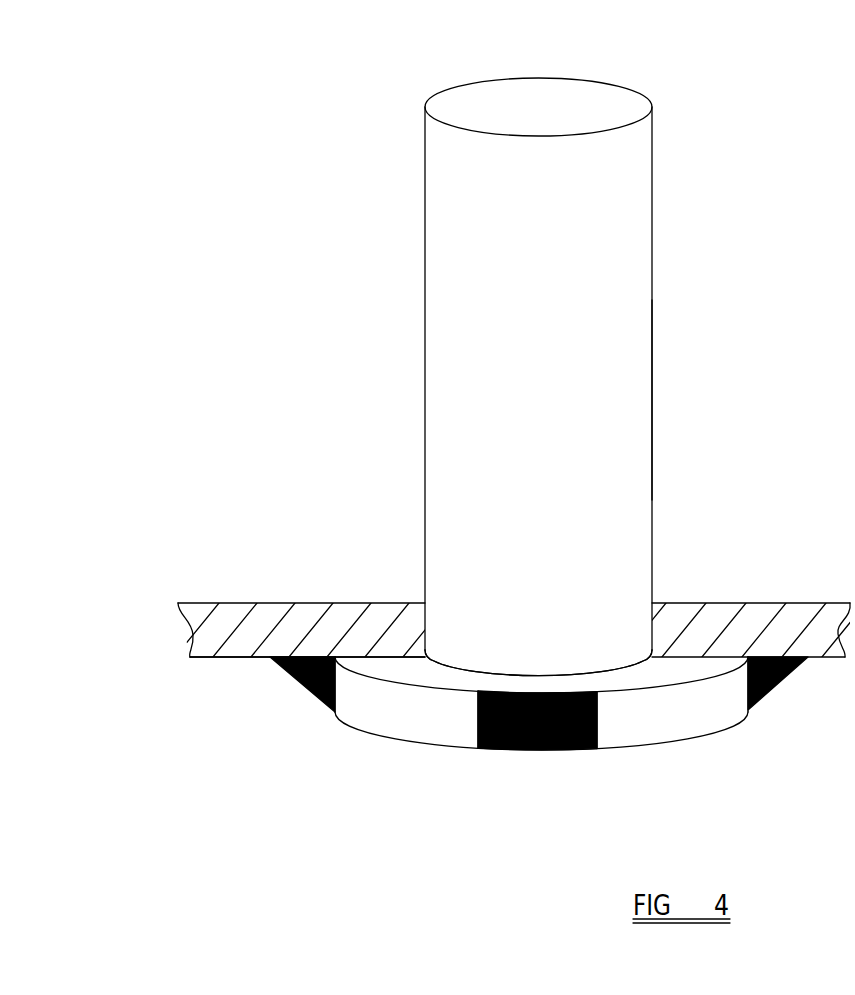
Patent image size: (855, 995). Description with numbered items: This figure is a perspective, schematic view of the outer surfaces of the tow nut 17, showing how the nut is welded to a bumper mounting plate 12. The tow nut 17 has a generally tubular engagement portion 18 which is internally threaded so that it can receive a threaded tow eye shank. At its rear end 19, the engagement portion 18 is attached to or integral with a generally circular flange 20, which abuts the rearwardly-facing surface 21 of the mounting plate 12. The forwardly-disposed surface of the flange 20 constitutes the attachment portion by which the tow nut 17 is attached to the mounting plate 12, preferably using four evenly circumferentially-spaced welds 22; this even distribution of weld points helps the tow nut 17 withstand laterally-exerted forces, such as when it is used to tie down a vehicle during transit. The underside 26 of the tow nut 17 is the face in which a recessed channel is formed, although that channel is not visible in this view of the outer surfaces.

The mounting plate 12 is at (688, 612).
The tow nut 17 is at (418, 398).
The engagement portion 18 is at (653, 400).
The rear end 19 is at (385, 746).
The flange 20 is at (395, 668).
The rearwardly-facing surface 21 is at (215, 660).
The welds 22 is at (305, 685).
The underside 26 is at (620, 755).